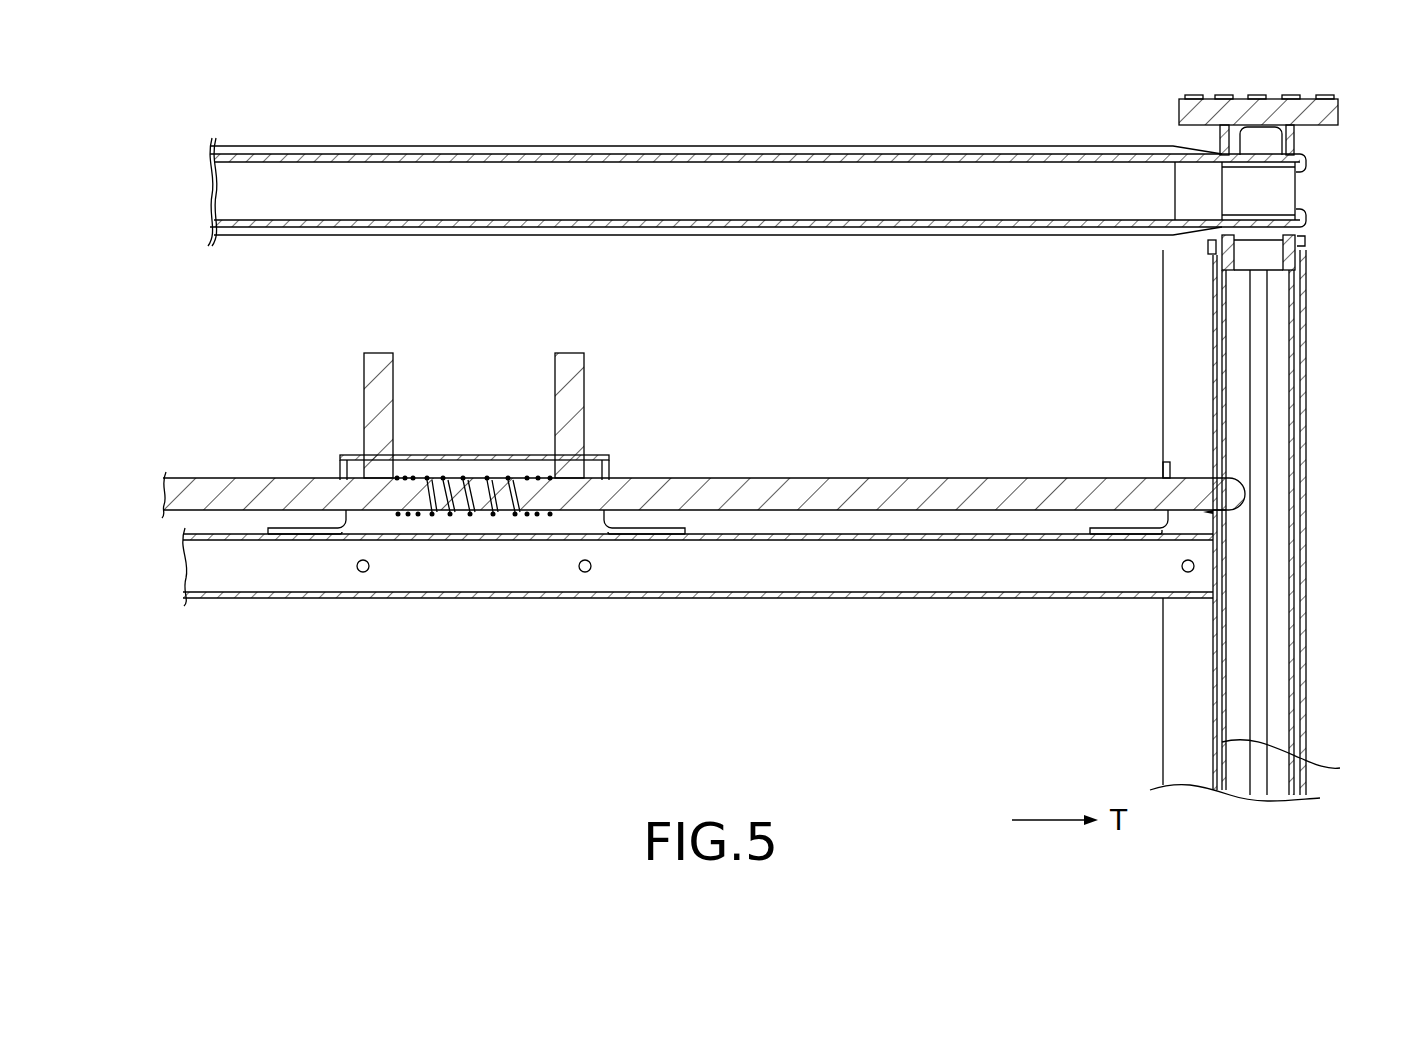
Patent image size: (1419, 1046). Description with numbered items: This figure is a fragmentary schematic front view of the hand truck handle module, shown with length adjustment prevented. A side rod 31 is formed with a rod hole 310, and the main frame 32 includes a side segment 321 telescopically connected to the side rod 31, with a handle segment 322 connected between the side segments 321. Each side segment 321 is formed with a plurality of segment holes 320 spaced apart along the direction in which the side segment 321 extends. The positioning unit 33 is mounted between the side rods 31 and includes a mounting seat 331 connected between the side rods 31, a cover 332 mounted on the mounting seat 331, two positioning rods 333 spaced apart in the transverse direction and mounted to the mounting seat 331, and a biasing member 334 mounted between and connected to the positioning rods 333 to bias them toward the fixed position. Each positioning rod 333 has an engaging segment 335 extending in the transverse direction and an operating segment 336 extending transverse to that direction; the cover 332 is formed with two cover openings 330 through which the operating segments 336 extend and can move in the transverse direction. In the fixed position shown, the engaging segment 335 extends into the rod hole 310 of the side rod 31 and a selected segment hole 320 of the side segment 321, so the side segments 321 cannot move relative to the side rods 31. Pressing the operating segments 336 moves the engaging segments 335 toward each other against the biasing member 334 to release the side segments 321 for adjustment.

The main frame 32 is at (226, 118).
The handle segment 322 is at (355, 160).
The side segment 321 is at (1275, 362).
The side rod 31 is at (1305, 457).
The segment hole 320 is at (1228, 510).
The rod hole 310 is at (1212, 508).
The positioning unit 33 is at (226, 466).
The mounting seat 331 is at (842, 598).
The cover 332 is at (342, 455).
The positioning rod 333 is at (245, 510).
The biasing member 334 is at (475, 512).
The engaging segment 335 is at (1185, 500).
The operating segment 336 is at (372, 370).
The cover opening 330 is at (526, 455).